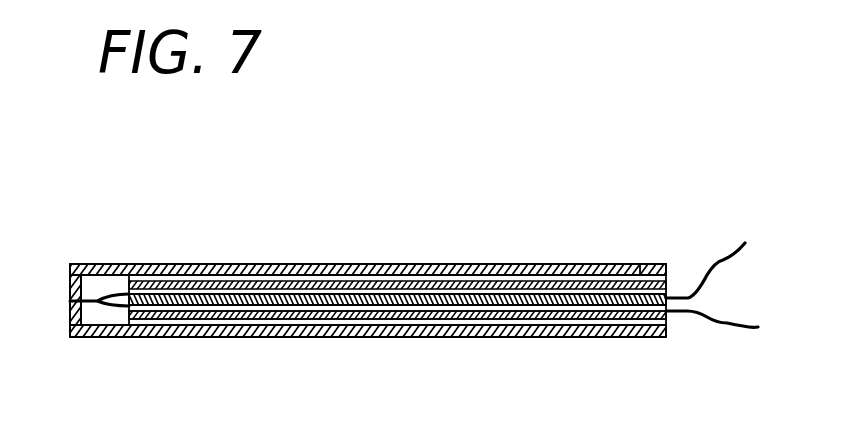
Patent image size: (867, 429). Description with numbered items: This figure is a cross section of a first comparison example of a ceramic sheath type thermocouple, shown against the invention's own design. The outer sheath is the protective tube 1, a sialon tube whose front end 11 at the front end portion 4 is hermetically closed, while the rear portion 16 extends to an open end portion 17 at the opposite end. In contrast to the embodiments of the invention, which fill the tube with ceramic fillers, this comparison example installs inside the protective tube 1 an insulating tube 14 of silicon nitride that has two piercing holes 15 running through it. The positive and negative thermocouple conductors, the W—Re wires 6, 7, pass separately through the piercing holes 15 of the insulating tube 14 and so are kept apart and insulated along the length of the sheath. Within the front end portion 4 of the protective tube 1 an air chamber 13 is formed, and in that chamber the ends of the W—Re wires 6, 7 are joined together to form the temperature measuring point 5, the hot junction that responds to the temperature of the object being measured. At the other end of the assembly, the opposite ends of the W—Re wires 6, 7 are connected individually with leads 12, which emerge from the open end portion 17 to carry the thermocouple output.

The protective tube 1 is at (395, 274).
The front end portion 4 is at (107, 338).
The temperature measuring point 5 is at (70, 301).
The W—Re wire 6 is at (483, 297).
The W—Re wire 7 is at (422, 318).
The front end 11 is at (70, 326).
The leads 12 is at (732, 247).
The air chamber 13 is at (101, 283).
The insulating tube 14 is at (232, 299).
The piercing holes 15 is at (358, 292).
The rear portion 16 is at (417, 275).
The open end portion 17 is at (647, 275).